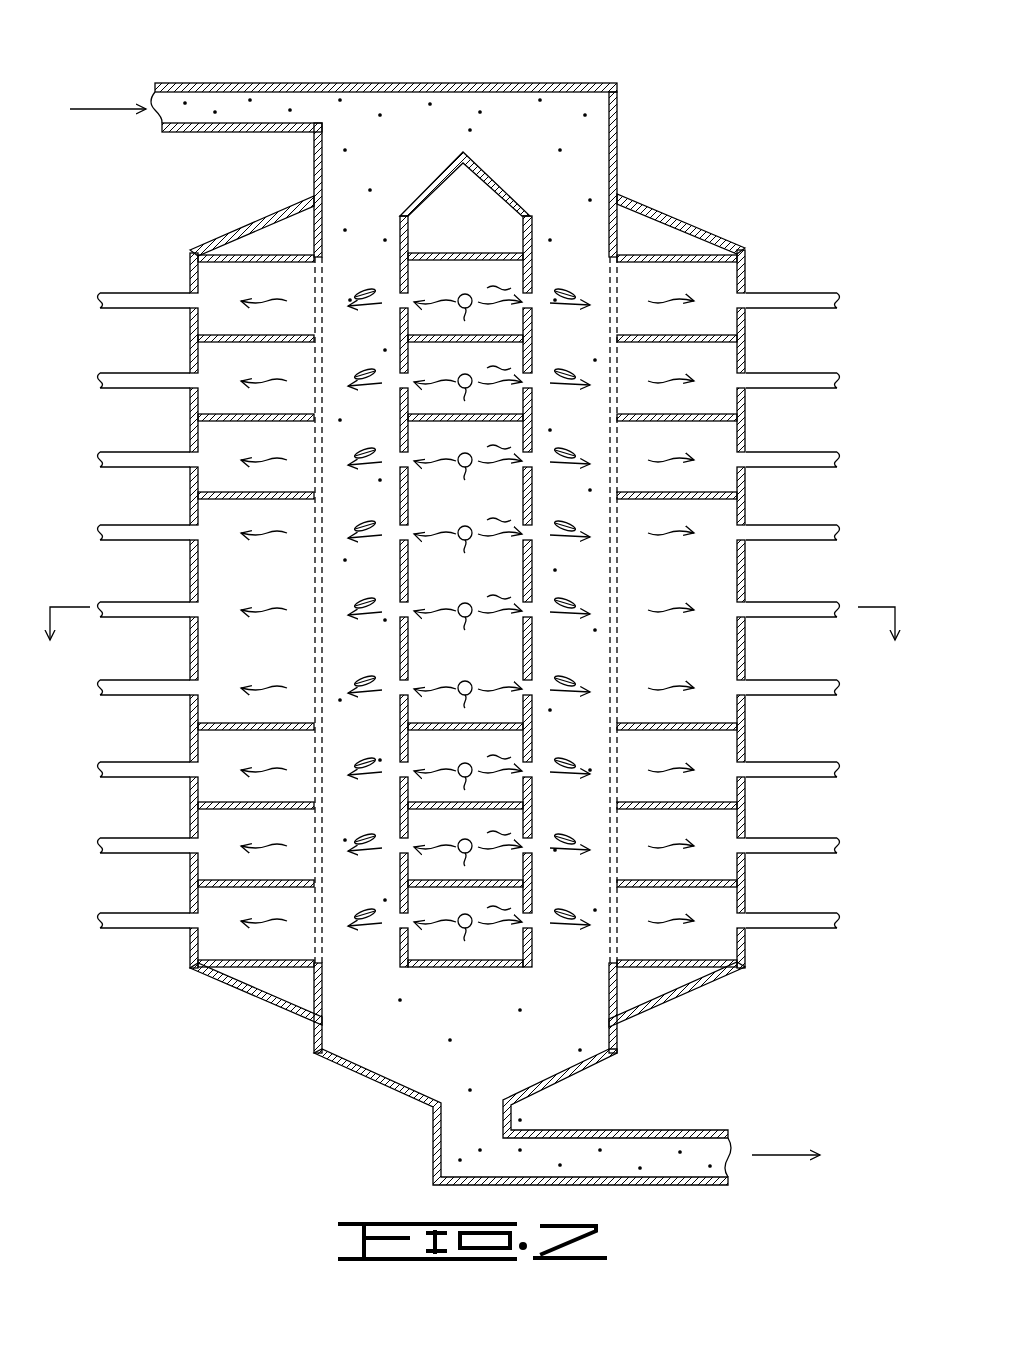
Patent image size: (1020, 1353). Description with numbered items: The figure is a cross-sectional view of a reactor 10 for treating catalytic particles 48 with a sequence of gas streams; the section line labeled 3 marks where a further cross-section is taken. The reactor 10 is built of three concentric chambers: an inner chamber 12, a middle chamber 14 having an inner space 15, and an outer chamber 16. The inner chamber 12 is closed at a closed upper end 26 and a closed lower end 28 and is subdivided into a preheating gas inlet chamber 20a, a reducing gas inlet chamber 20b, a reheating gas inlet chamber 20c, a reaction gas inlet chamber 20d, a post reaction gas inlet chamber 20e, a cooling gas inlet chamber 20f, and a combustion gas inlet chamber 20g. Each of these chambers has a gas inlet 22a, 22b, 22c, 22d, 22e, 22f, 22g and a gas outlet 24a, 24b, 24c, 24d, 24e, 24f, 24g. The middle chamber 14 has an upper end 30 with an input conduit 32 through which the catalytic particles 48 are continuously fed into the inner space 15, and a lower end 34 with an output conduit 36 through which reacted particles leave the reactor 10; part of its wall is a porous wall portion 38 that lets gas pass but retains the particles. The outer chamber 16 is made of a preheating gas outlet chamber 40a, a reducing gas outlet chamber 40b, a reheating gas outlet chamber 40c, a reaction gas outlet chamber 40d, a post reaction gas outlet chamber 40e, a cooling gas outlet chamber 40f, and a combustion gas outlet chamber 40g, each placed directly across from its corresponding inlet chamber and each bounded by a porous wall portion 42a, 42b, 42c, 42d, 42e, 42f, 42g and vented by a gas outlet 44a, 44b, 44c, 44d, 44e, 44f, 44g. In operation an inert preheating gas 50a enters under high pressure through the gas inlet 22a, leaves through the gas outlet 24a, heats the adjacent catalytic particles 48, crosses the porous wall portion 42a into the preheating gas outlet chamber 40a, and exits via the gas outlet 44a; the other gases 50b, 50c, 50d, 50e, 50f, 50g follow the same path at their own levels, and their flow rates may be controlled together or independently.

The reactor 10 is at (170, 215).
The inner chamber 12 is at (537, 235).
The middle chamber 14 is at (313, 375).
The inner space 15 is at (405, 118).
The outer chamber 16 is at (190, 274).
The preheating gas inlet chamber 20a is at (465, 271).
The reducing gas inlet chamber 20b is at (466, 352).
The reheating gas inlet chamber 20c is at (465, 431).
The reaction gas inlet chamber 20d is at (500, 558).
The post reaction gas inlet chamber 20e is at (465, 741).
The cooling gas inlet chamber 20f is at (465, 818).
The combustion gas inlet chamber 20g is at (466, 895).
The gas inlet 22a is at (491, 315).
The gas inlet 22b is at (492, 395).
The gas inlet 22c is at (491, 474).
The gas inlet 22d is at (492, 624).
The gas inlet 22e is at (491, 784).
The gas inlet 22f is at (489, 860).
The gas inlet 22g is at (492, 935).
The gas outlet 24a is at (467, 276).
The gas outlet 24b is at (468, 362).
The gas outlet 24c is at (467, 441).
The gas outlet 24d is at (468, 595).
The gas outlet 24e is at (467, 750).
The gas outlet 24f is at (465, 829).
The gas outlet 24g is at (468, 904).
The closed upper end 26 is at (497, 183).
The closed lower end 28 is at (463, 967).
The upper end 30 is at (592, 88).
The input conduit 32 is at (200, 130).
The lower end 34 is at (531, 1088).
The output conduit 36 is at (681, 1122).
The porous wall portion 38 is at (316, 658).
The preheating gas outlet chamber 40a is at (470, 316).
The reducing gas outlet chamber 40b is at (470, 396).
The reheating gas outlet chamber 40c is at (469, 475).
The reaction gas outlet chamber 40d is at (470, 610).
The post reaction gas outlet chamber 40e is at (470, 785).
The cooling gas outlet chamber 40f is at (467, 861).
The combustion gas outlet chamber 40g is at (470, 936).
The porous wall portion 42a is at (467, 276).
The porous wall portion 42b is at (240, 378).
The porous wall portion 42c is at (467, 435).
The porous wall portion 42d is at (467, 549).
The porous wall portion 42e is at (467, 745).
The porous wall portion 42f is at (467, 822).
The porous wall portion 42g is at (467, 899).
The gas outlet 44a is at (468, 284).
The gas outlet 44b is at (128, 372).
The gas outlet 44c is at (468, 443).
The gas outlet 44d is at (469, 593).
The gas outlet 44e is at (468, 753).
The gas outlet 44f is at (466, 829).
The gas outlet 44g is at (469, 904).
The catalytic particles 48 is at (297, 107).
The inert preheating gas 50a is at (467, 297).
The reducing gas 50b is at (248, 381).
The reheating gas 50c is at (467, 456).
The reaction gas 50d is at (558, 684).
The post reaction gas 50e is at (467, 766).
The cooling gas 50f is at (467, 842).
The combustion gas 50g is at (467, 917).
The section line 3- 3 is at (469, 651).